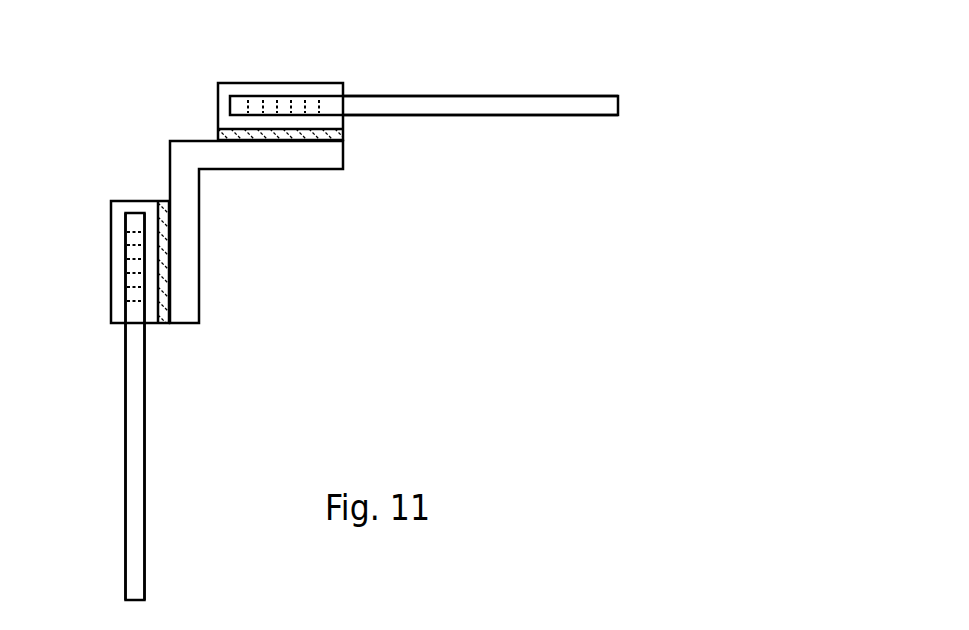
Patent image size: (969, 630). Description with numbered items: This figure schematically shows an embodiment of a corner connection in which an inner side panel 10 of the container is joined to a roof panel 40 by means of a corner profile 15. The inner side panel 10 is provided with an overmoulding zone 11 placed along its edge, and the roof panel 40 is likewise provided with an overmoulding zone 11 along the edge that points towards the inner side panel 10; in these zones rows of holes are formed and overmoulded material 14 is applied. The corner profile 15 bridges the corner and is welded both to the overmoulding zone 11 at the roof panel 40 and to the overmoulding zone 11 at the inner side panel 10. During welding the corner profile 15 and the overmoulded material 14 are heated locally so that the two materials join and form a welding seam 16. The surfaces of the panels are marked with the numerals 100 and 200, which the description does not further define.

The inner side panel 10 is at (137, 410).
The overmoulding zone 11 is at (148, 175).
The overmoulded material 14 is at (288, 90).
The corner profile 15 is at (315, 160).
The welding seam 16 is at (345, 135).
The roof panel 40 is at (416, 105).
The first surface 100 is at (590, 95).
The second surface 200 is at (600, 117).